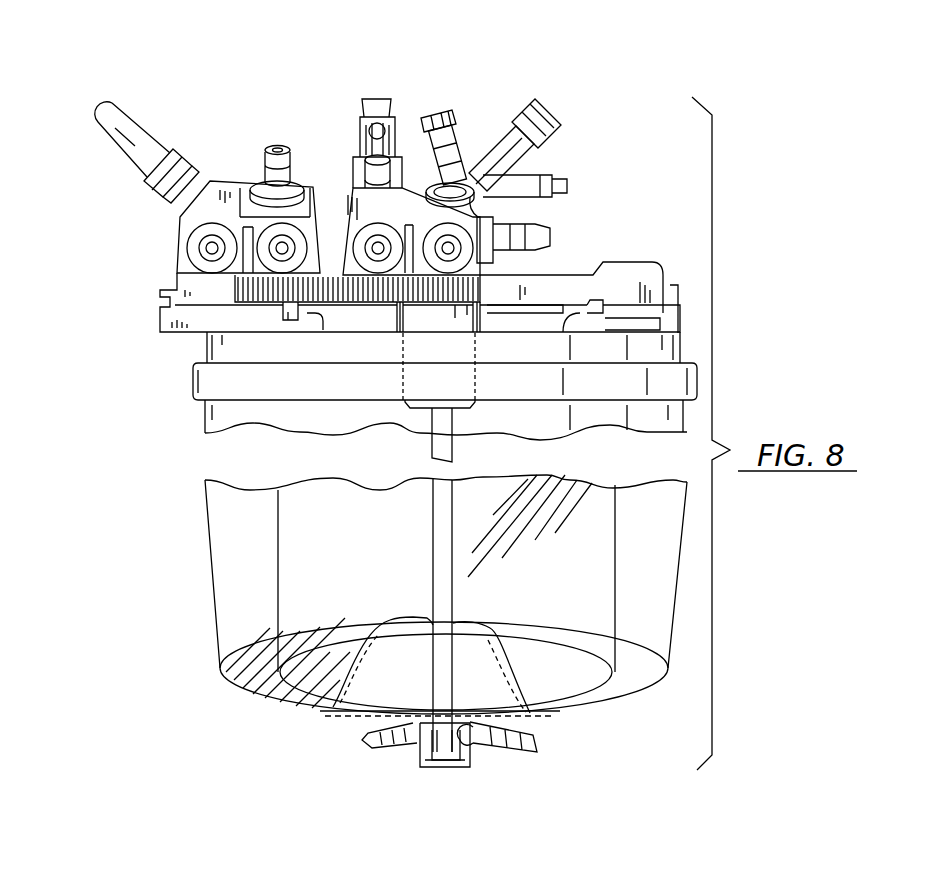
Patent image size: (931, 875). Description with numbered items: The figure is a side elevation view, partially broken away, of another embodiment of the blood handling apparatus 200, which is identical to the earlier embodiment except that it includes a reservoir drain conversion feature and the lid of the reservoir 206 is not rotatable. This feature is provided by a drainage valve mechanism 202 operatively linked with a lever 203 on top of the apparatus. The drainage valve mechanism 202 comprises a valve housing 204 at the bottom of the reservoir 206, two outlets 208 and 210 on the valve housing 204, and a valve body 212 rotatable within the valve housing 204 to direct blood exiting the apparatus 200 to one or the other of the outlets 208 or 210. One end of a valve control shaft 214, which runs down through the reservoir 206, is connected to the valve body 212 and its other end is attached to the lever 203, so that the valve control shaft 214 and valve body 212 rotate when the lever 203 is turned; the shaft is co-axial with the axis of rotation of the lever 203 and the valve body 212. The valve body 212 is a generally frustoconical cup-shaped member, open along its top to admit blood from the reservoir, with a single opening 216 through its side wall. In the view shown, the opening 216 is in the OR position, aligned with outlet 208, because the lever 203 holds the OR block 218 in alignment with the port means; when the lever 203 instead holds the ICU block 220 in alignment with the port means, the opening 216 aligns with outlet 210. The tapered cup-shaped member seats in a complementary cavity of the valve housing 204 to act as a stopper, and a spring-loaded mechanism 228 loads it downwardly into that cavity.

The apparatus 200 is at (167, 379).
The drainage valve mechanism 202 is at (398, 785).
The lever 203 is at (627, 270).
The valve housing 204 is at (427, 770).
The reservoir 206 is at (207, 535).
The outlet 208 is at (520, 754).
The outlet 210 is at (383, 754).
The valve body 212 is at (460, 768).
The valve control shaft 214 is at (433, 477).
The opening 216 is at (477, 750).
The OR block 218 is at (458, 103).
The ICU block 220 is at (235, 163).
The spring-loaded mechanism 228 is at (405, 406).